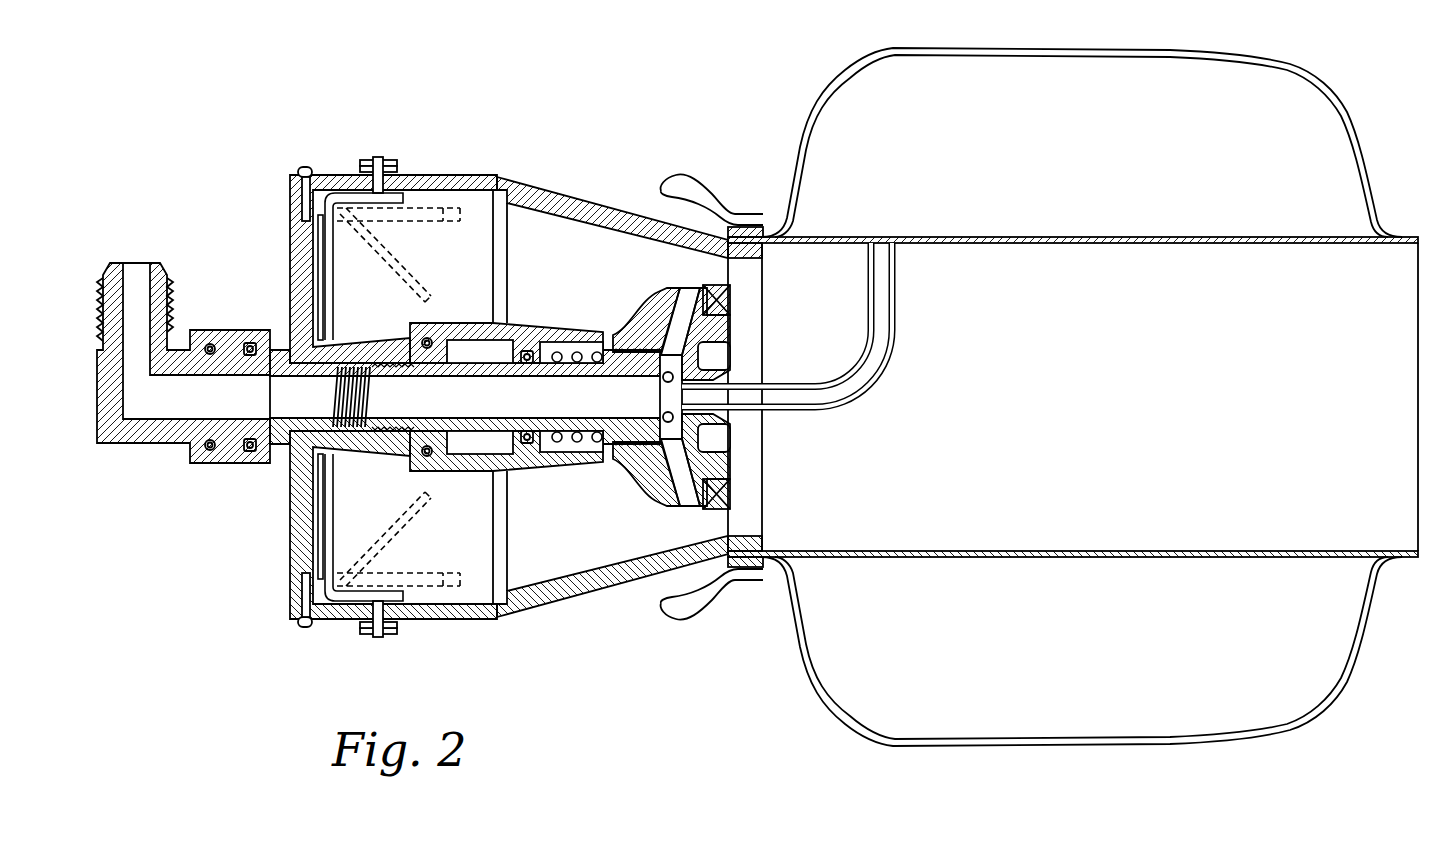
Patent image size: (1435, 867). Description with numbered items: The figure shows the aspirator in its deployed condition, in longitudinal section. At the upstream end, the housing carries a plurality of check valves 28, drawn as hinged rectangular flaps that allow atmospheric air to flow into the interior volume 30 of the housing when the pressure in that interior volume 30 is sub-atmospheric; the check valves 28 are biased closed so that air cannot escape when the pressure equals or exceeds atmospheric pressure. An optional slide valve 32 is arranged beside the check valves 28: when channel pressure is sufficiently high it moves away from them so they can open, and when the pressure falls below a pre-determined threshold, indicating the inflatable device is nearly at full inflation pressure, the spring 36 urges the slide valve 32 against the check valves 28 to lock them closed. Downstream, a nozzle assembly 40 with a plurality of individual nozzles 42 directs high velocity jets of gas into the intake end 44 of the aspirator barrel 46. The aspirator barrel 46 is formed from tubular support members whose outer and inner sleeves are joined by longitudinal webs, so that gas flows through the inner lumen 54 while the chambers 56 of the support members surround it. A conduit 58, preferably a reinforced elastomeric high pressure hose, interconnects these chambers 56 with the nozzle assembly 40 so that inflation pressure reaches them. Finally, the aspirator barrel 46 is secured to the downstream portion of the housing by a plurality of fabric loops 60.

The check valves 28 is at (330, 270).
The interior volume 30 is at (592, 270).
The slide valve 32 is at (518, 465).
The spring 36 is at (588, 437).
The nozzle assembly 40 is at (652, 300).
The nozzles 42 is at (721, 298).
The intake end 44 is at (808, 246).
The aspirator barrel 46 is at (833, 660).
The inner lumen 54 is at (1120, 405).
The chambers 56 is at (1122, 150).
The conduit 58 is at (871, 383).
The fabric loops 60 is at (682, 172).